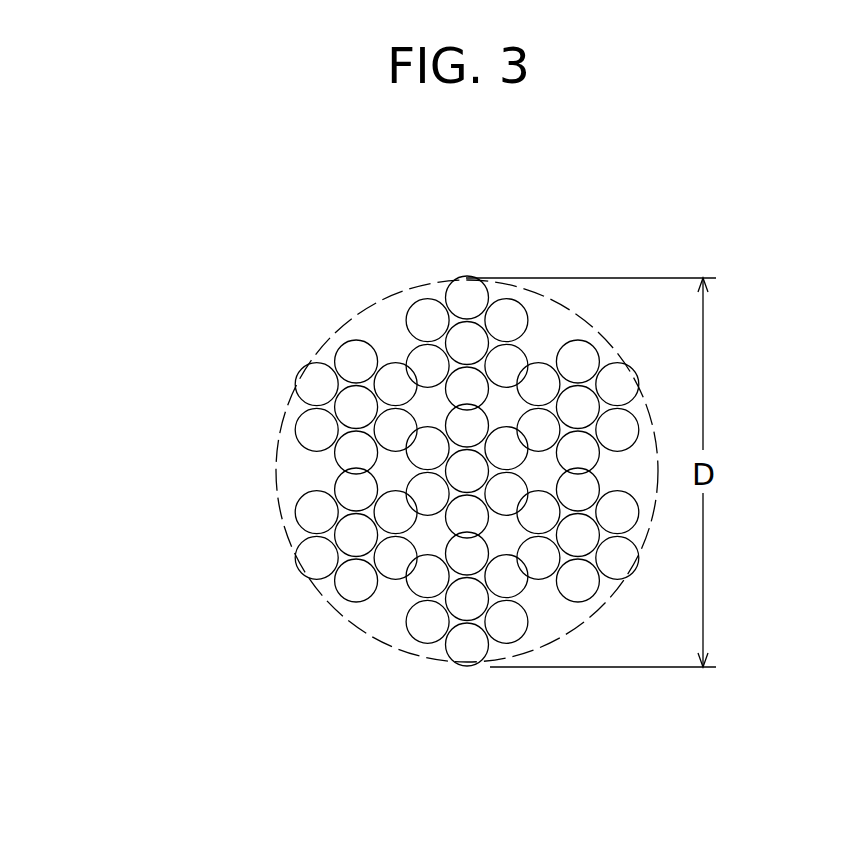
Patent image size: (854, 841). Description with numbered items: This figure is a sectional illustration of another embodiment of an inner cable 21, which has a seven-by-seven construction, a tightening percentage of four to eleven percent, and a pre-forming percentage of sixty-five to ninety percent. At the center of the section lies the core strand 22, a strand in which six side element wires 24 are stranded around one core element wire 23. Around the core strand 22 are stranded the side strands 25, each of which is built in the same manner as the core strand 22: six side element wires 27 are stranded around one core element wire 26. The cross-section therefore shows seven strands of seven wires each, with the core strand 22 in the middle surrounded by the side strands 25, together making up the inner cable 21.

The inner cable 21 is at (177, 491).
The core strand 22 is at (374, 594).
The core element wire 23 is at (467, 471).
The side element wire 24 is at (432, 493).
The side strand 25 is at (402, 459).
The core element wire 26 is at (350, 413).
The side element wire 27 is at (355, 364).